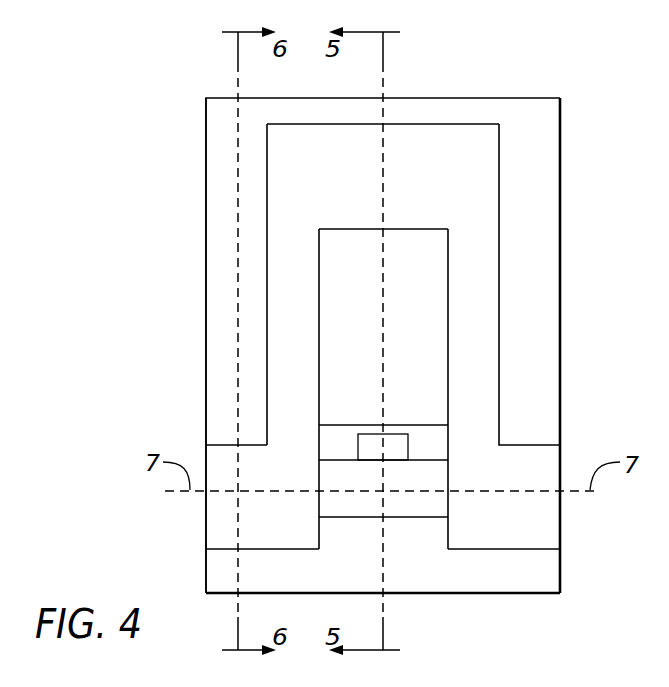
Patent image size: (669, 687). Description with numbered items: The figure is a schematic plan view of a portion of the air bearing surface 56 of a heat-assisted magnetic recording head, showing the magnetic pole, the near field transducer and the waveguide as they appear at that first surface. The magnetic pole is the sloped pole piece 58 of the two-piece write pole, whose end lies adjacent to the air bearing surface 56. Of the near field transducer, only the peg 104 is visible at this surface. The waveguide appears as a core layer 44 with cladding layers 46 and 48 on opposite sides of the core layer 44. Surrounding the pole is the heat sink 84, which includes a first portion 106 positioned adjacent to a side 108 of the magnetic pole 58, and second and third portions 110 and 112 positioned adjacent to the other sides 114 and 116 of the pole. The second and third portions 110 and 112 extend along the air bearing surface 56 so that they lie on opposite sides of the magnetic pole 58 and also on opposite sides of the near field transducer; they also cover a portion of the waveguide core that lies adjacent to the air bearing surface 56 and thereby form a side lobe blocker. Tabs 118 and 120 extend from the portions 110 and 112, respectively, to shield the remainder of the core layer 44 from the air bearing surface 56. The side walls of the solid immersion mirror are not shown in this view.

The core layer 44 is at (437, 505).
The cladding layer 46 is at (552, 573).
The cladding layer 48 is at (548, 191).
The air bearing surface 56 is at (230, 378).
The sloped pole piece 58 is at (435, 305).
The heat sink 84 is at (453, 132).
The peg 104 is at (397, 444).
The first portion of heat sink 106 is at (312, 180).
The side of magnetic pole 108 is at (412, 229).
The second portion of heat sink 110 is at (280, 267).
The third portion of heat sink 112 is at (492, 260).
The side of magnetic pole 114 is at (319, 350).
The side of magnetic pole 116 is at (475, 352).
The tab 118 is at (240, 530).
The tab 120 is at (535, 538).